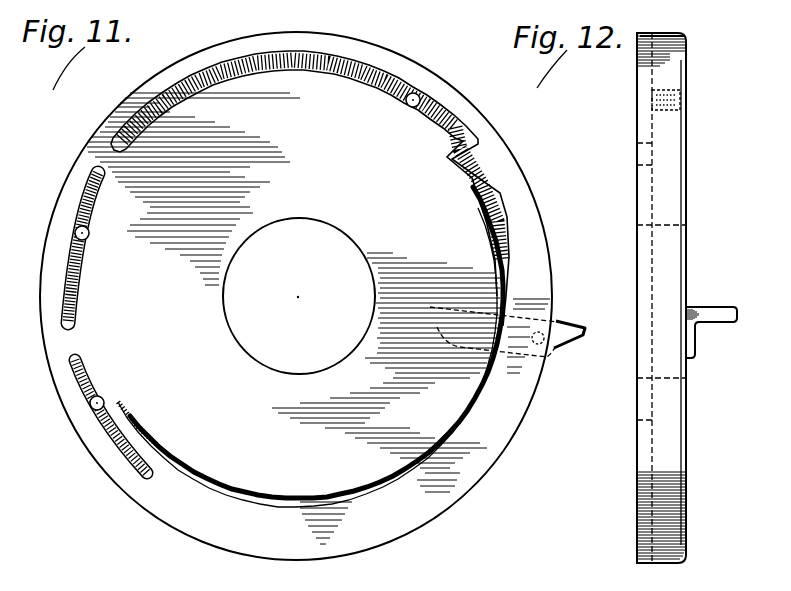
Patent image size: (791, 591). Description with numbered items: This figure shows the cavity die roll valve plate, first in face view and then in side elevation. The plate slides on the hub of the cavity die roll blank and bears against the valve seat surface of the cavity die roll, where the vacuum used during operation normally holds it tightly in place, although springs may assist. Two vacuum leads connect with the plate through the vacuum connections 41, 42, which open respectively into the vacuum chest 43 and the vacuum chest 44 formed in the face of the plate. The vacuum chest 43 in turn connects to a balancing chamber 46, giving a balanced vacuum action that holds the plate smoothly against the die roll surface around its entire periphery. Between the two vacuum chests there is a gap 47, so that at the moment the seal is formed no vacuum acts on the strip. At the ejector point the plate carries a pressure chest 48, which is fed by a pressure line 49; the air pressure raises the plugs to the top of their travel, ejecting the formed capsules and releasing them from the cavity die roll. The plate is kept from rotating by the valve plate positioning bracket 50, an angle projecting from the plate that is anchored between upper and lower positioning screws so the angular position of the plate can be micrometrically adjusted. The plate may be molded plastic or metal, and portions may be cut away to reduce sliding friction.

In FIG. 11, the vacuum connection 41 is at (413, 90).
In FIG. 12, the vacuum connection 41 is at (680, 98).
In FIG. 11, the vacuum connection 42 is at (74, 232).
In FIG. 11, the vacuum chest 43 is at (324, 56).
In FIG. 12, the vacuum chest 43 is at (658, 34).
In FIG. 11, the vacuum chest 44 is at (90, 193).
In FIG. 11, the balancing chamber 46 is at (285, 500).
In FIG. 12, the balancing chamber 46 is at (637, 512).
In FIG. 11, the gap 47 is at (107, 163).
In FIG. 11, the pressure chest 48 is at (123, 450).
In FIG. 11, the pressure line 49 is at (93, 407).
In FIG. 11, the valve plate positioning bracket 50 is at (567, 320).
In FIG. 12, the valve plate positioning bracket 50 is at (726, 296).